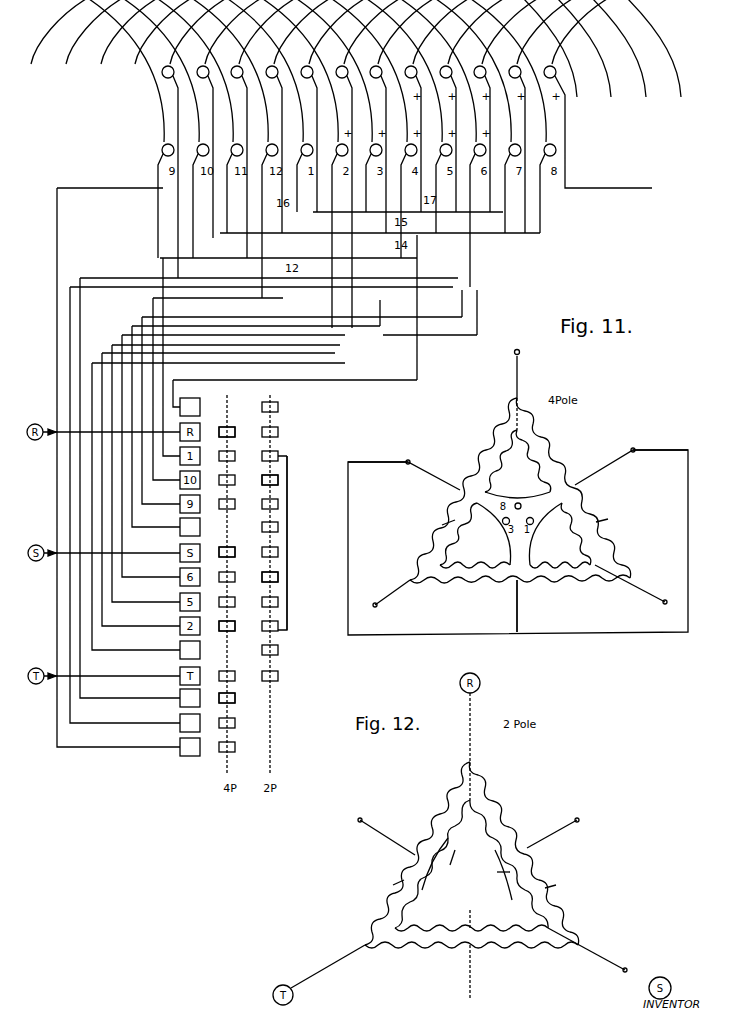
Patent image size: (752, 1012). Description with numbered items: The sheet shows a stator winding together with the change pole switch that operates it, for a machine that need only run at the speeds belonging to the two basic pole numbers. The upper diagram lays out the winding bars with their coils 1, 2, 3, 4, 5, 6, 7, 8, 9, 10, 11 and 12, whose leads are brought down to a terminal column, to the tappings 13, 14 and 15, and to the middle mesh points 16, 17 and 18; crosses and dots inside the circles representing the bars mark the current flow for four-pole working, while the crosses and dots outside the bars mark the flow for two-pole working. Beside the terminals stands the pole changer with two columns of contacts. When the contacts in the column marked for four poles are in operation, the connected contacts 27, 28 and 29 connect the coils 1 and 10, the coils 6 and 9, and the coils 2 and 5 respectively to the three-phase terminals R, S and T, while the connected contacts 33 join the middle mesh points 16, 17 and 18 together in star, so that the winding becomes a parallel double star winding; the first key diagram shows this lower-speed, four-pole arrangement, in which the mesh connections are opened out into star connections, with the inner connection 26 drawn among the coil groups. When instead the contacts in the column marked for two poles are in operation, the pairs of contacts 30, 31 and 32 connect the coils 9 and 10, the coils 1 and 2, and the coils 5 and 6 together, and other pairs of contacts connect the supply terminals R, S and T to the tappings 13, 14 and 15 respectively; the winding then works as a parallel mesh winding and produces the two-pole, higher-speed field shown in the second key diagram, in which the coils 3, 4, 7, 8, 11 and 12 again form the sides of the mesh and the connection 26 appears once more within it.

In FIG. 10, the coil 1 is at (168, 65).
In FIG. 11, the coil 1 is at (533, 461).
In FIG. 12, the coil 1 is at (509, 864).
In FIG. 10, the coil 2 is at (203, 65).
In FIG. 11, the coil 2 is at (576, 534).
In FIG. 12, the coil 2 is at (508, 881).
In FIG. 10, the coil 3 is at (237, 65).
In FIG. 11, the coil 3 is at (442, 523).
In FIG. 12, the coil 3 is at (510, 921).
In FIG. 10, the coil 4 is at (272, 65).
In FIG. 11, the coil 4 is at (463, 489).
In FIG. 12, the coil 4 is at (417, 853).
In FIG. 10, the coil 5 is at (307, 65).
In FIG. 11, the coil 5 is at (560, 559).
In FIG. 12, the coil 5 is at (392, 882).
In FIG. 10, the coil 6 is at (342, 65).
In FIG. 11, the coil 6 is at (475, 559).
In FIG. 12, the coil 6 is at (433, 921).
In FIG. 10, the coil 7 is at (376, 65).
In FIG. 11, the coil 7 is at (573, 488).
In FIG. 12, the coil 7 is at (523, 853).
In FIG. 10, the coil 8 is at (411, 65).
In FIG. 11, the coil 8 is at (604, 521).
In FIG. 12, the coil 8 is at (555, 886).
In FIG. 10, the coil 9 is at (446, 65).
In FIG. 11, the coil 9 is at (458, 534).
In FIG. 12, the coil 9 is at (433, 870).
In FIG. 10, the coil 10 is at (478, 65).
In FIG. 11, the coil 10 is at (501, 461).
In FIG. 12, the coil 10 is at (432, 864).
In FIG. 10, the coil 11 is at (513, 65).
In FIG. 11, the coil 11 is at (575, 589).
In FIG. 12, the coil 11 is at (525, 952).
In FIG. 10, the coil 12 is at (548, 65).
In FIG. 11, the coil 12 is at (465, 592).
In FIG. 12, the coil 12 is at (418, 954).
In FIG. 10, the tapping 13 is at (190, 407).
In FIG. 11, the tapping 13 is at (525, 497).
In FIG. 12, the tapping 13 is at (479, 847).
In FIG. 10, the tapping 14 is at (190, 527).
In FIG. 11, the tapping 14 is at (636, 592).
In FIG. 12, the tapping 14 is at (587, 955).
In FIG. 10, the tapping 15 is at (190, 650).
In FIG. 11, the tapping 15 is at (389, 601).
In FIG. 12, the tapping 15 is at (328, 969).
In FIG. 10, the middle mesh point 16 is at (190, 698).
In FIG. 11, the middle mesh point 16 is at (404, 467).
In FIG. 12, the middle mesh point 16 is at (386, 830).
In FIG. 10, the middle mesh point 17 is at (190, 723).
In FIG. 11, the middle mesh point 17 is at (631, 459).
In FIG. 12, the middle mesh point 17 is at (559, 833).
In FIG. 10, the middle mesh point 18 is at (618, 189).
In FIG. 11, the connection 26 is at (494, 534).
In FIG. 12, the connection 26 is at (446, 863).
In FIG. 10, the connected contacts 27 is at (219, 430).
In FIG. 11, the connected contacts 27 is at (517, 488).
In FIG. 10, the connected contacts 28 is at (219, 550).
In FIG. 10, the connected contacts 29 is at (221, 632).
In FIG. 11, the connected contacts 29 is at (545, 534).
In FIG. 10, the pair of contacts 30 is at (262, 481).
In FIG. 11, the pair of contacts 30 is at (492, 634).
In FIG. 10, the pair of contacts 31 is at (287, 456).
In FIG. 12, the pair of contacts 31 is at (496, 872).
In FIG. 10, the pair of contacts 32 is at (262, 578).
In FIG. 12, the pair of contacts 32 is at (470, 913).
In FIG. 10, the connected contacts 33 is at (221, 700).